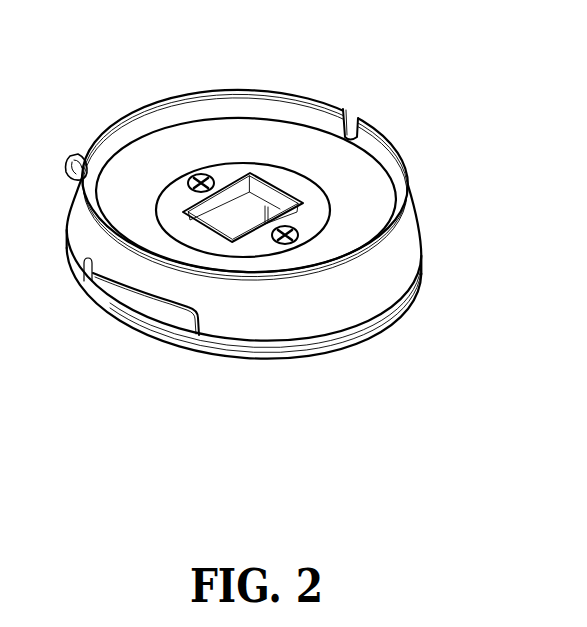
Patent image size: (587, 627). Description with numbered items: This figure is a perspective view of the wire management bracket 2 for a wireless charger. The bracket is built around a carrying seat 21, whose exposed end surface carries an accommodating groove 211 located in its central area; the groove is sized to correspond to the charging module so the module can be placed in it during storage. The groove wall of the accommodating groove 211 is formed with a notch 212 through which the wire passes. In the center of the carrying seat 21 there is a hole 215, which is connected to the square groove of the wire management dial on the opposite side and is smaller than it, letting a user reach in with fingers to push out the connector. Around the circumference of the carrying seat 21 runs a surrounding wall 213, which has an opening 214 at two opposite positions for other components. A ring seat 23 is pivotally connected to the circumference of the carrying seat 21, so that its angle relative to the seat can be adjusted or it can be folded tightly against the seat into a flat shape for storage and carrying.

The wire management bracket 2 is at (297, 224).
The carrying seat 21 is at (276, 224).
The accommodating groove 211 is at (146, 156).
The notch 212 is at (357, 127).
The surrounding wall 213 is at (255, 325).
The opening 214 is at (156, 306).
The hole 215 is at (234, 214).
The ring seat 23 is at (288, 303).